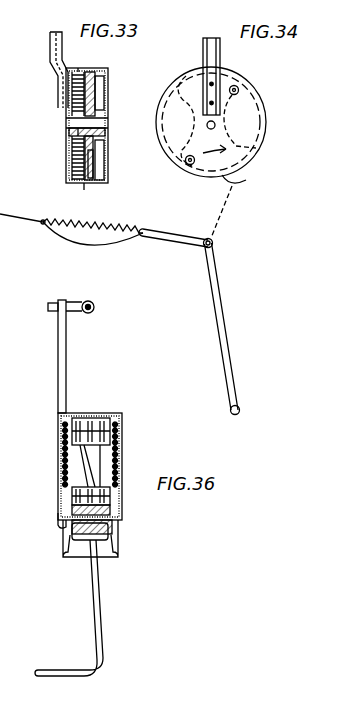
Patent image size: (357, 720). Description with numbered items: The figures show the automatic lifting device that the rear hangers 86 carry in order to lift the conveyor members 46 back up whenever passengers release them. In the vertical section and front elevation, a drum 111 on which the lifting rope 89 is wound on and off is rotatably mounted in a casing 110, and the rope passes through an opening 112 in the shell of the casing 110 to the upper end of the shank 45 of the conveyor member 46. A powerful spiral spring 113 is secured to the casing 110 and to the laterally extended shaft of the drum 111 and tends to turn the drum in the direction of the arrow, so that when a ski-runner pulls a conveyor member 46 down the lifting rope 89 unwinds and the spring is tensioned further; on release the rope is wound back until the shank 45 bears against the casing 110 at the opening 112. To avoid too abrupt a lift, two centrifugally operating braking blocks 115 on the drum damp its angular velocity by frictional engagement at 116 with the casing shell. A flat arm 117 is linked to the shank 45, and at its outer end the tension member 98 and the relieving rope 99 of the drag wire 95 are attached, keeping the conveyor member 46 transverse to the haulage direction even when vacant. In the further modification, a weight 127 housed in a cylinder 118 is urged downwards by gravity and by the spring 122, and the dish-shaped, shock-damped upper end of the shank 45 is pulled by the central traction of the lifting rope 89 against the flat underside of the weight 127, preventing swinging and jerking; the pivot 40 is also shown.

In FIG. 36, the pivot pin 40 is at (94, 311).
In FIG. 34, the shank 45 is at (224, 298).
In FIG. 36, the shank 45 is at (100, 600).
In FIG. 34, the conveyor member 46 is at (240, 410).
In FIG. 36, the conveyor member 46 is at (55, 670).
In FIG. 33, the rear hanger 86 is at (50, 50).
In FIG. 33, the lifting rope 89 is at (84, 186).
In FIG. 34, the lifting rope 89 is at (228, 207).
In FIG. 36, the lifting rope 89 is at (106, 455).
In FIG. 34, the drag wire 95 is at (21, 224).
In FIG. 34, the tension member 98 is at (118, 230).
In FIG. 34, the relieving rope 99 is at (98, 244).
In FIG. 33, the casing 110 is at (108, 152).
In FIG. 34, the casing 110 is at (266, 120).
In FIG. 33, the drum 111 is at (93, 167).
In FIG. 34, the opening 112 is at (247, 178).
In FIG. 33, the spiral spring 113 is at (66, 155).
In FIG. 34, the centrifugally operating braking block 115 is at (187, 88).
In FIG. 34, the frictional engagement 116 is at (250, 92).
In FIG. 34, the flat arm 117 is at (166, 242).
In FIG. 36, the cylinder 118 is at (57, 516).
In FIG. 36, the spring 122 is at (58, 460).
In FIG. 36, the weight 127 is at (120, 508).